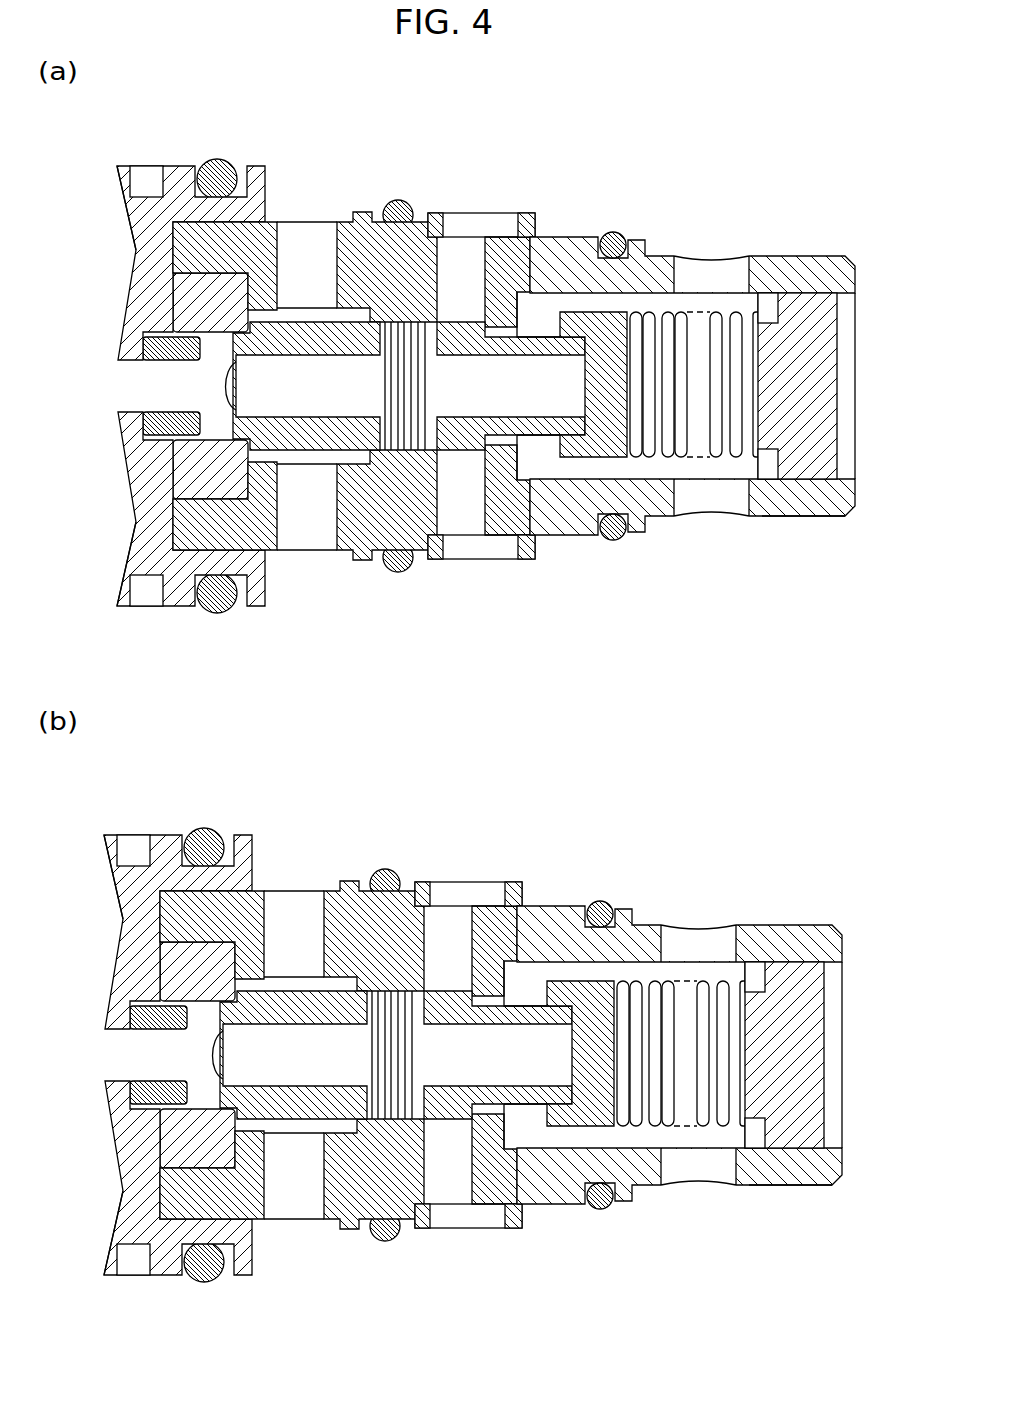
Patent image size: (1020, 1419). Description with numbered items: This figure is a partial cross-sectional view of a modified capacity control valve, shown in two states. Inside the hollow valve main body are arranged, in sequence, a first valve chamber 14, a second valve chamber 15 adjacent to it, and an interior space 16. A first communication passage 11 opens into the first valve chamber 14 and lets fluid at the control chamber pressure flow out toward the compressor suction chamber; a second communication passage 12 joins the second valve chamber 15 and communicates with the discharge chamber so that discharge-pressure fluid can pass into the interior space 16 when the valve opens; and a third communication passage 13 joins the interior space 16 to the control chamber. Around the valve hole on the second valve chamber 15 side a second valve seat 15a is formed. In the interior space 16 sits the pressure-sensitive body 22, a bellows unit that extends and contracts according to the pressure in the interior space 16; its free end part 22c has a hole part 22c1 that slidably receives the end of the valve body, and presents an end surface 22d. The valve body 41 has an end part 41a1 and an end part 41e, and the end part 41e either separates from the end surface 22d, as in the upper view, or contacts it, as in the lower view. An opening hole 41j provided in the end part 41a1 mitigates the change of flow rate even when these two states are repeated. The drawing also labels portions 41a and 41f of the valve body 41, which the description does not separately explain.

The first communication passage 11 is at (313, 528).
The second communication passage 12 is at (453, 514).
The third communication passage 13 is at (716, 500).
The first valve chamber 14 is at (356, 480).
The second valve chamber 15 is at (458, 512).
The second valve seat 15a is at (488, 516).
The interior space 16 is at (762, 510).
The pressure-sensitive body 22 is at (704, 296).
The free end part 22c is at (615, 235).
The hole part 22c1 is at (548, 462).
The end surface 22d is at (600, 385).
The valve body 41 is at (313, 307).
The valve plate 41a is at (541, 330).
The end part 41a1 is at (538, 470).
The end part 41e is at (614, 536).
The valve flange 41f is at (533, 335).
The opening hole 41j is at (571, 335).